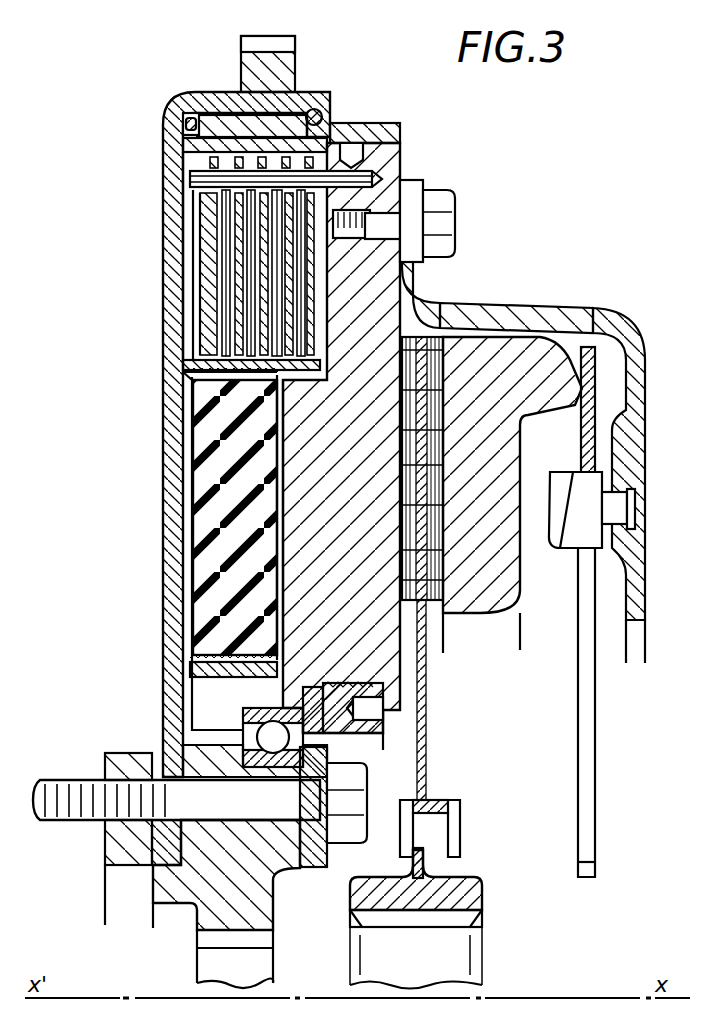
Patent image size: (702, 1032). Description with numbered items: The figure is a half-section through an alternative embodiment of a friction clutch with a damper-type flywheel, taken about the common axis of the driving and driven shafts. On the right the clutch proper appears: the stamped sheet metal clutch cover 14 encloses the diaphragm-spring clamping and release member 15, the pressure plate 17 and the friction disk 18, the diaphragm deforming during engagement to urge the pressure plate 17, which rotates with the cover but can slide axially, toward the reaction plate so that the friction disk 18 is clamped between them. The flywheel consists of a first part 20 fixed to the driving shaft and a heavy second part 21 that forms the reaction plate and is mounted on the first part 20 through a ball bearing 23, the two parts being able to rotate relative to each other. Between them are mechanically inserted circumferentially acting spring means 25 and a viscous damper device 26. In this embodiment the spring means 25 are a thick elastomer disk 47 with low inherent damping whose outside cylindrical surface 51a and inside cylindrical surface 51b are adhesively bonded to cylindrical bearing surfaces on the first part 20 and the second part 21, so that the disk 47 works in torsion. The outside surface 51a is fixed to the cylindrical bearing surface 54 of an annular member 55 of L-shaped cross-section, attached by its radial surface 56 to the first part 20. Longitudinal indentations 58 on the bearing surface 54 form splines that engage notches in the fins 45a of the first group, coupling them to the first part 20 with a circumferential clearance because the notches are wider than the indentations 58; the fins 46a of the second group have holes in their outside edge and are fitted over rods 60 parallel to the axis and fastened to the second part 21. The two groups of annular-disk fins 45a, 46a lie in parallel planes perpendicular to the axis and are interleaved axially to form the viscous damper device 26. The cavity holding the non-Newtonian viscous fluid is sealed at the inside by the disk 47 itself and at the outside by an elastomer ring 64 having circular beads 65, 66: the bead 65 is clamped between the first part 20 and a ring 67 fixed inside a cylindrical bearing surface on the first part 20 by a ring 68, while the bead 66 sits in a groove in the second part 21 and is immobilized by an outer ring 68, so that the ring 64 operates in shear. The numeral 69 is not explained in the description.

The clutch cover 14 is at (560, 310).
The clamping and release member 15 is at (595, 731).
The pressure plate 17 is at (510, 333).
The friction disk 18 is at (432, 337).
The first part 20 is at (163, 388).
The second part 21 is at (386, 173).
The ball bearing 23 is at (278, 768).
The circumferentially acting spring means 25 is at (192, 468).
The viscous damper device 26 is at (202, 318).
The fins of the first group 45a is at (215, 212).
The fins of the second group 46a is at (225, 242).
The elastomer material disk 47 is at (245, 498).
The outside cylindrical surface 51a is at (237, 374).
The inside cylindrical surface 51b is at (238, 666).
The cylindrical bearing surface 54 is at (305, 378).
The annular member 55 is at (185, 295).
The radial surface 56 is at (197, 272).
The longitudinal indentations 58 is at (320, 360).
The rods 60 is at (200, 176).
The ring of elastomer material 64 is at (244, 137).
The bead 65 is at (208, 118).
The bead 66 is at (352, 152).
The ring 67 is at (265, 92).
The ring 68 is at (316, 110).
The retaining block 69 is at (378, 125).